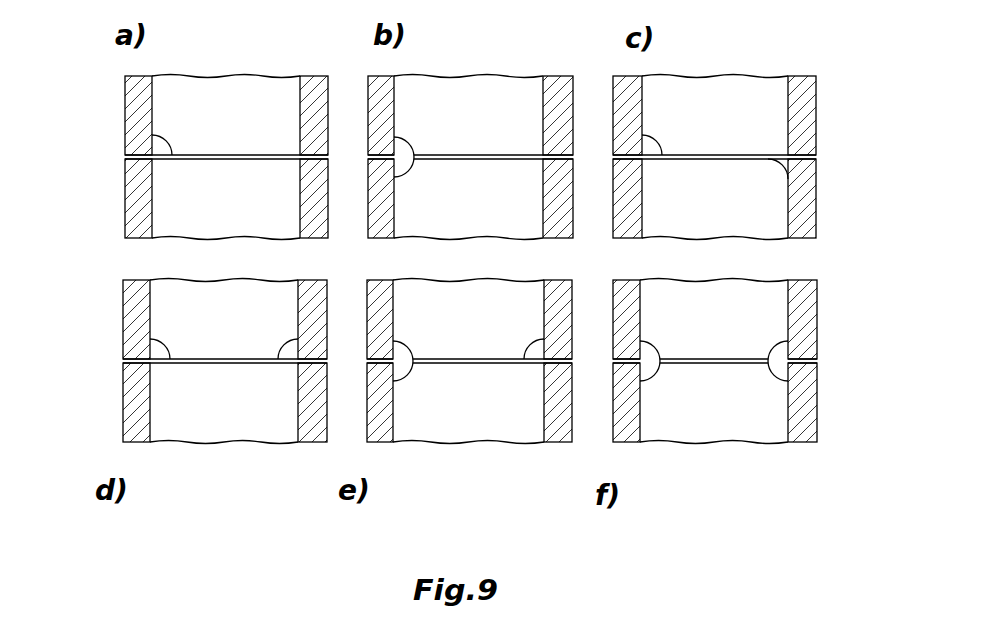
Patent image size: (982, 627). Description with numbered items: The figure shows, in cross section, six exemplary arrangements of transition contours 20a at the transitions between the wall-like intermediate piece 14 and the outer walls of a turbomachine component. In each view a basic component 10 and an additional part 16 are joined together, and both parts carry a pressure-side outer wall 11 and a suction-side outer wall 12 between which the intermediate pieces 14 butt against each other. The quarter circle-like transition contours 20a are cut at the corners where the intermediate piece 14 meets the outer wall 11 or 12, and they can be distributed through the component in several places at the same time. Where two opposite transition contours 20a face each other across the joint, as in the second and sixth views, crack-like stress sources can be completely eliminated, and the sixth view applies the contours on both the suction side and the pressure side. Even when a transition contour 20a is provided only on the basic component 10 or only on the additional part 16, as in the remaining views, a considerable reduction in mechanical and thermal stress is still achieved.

The basic component 10 is at (133, 200).
The pressure-side outer wall 11 is at (380, 335).
The suction-side outer wall 12 is at (558, 402).
The intermediate piece 14 is at (251, 92).
The additional part 16 is at (133, 117).
The transition contour 20a is at (163, 137).